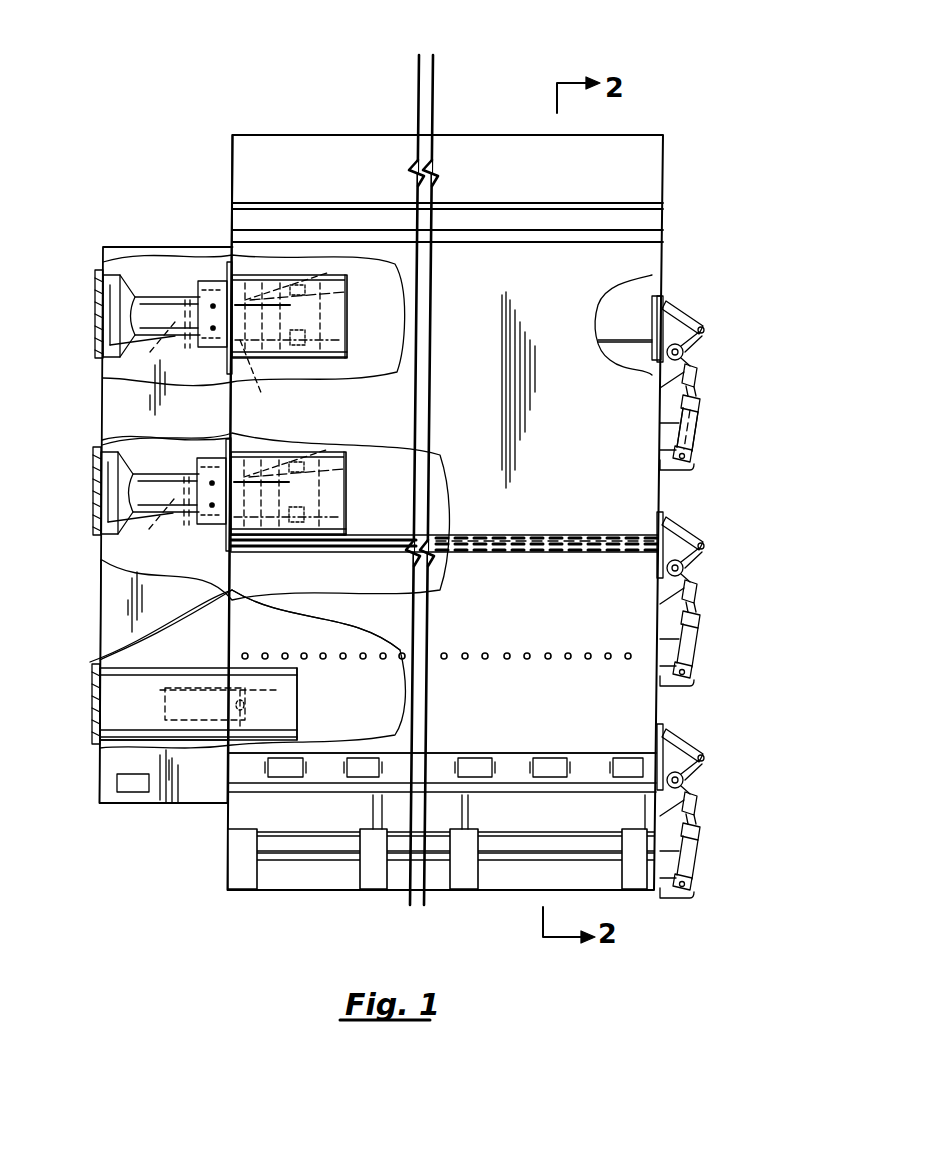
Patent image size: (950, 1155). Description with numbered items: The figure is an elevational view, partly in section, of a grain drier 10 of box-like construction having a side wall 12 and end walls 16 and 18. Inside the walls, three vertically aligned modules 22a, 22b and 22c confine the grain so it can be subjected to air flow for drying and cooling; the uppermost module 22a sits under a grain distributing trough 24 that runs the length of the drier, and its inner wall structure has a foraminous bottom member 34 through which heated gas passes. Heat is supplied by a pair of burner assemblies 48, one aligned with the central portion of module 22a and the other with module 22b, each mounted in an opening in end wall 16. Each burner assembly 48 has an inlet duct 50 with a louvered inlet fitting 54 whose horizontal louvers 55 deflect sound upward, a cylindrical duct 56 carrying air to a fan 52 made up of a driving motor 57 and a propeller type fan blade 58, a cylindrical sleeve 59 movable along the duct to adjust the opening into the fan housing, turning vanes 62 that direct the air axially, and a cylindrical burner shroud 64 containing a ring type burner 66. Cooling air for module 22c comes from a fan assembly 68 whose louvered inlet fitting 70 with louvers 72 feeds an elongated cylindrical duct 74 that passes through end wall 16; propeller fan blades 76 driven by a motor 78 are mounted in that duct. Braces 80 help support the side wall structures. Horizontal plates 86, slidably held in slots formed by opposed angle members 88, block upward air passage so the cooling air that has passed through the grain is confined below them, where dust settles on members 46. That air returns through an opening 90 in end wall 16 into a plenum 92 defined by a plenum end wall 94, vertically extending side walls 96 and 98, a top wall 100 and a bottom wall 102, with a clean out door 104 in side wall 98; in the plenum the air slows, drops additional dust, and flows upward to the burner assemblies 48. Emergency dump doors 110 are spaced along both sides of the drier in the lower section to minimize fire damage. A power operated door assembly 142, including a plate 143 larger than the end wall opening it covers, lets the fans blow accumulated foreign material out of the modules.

The grain drier 10 is at (477, 357).
The side wall 12 is at (562, 319).
The end wall 16 is at (230, 420).
The end wall 18 is at (692, 426).
The module 22a is at (397, 344).
The module 22b is at (397, 510).
The module 22c is at (377, 711).
The grain distributing trough 24 is at (236, 165).
The foraminous bottom member 34 is at (620, 345).
The members 46 is at (585, 757).
The burner assembly 48 is at (118, 342).
The inlet duct 50 is at (148, 294).
The fan 52 is at (190, 350).
The louvered inlet fitting 54 is at (110, 322).
The louvers 55 is at (95, 290).
The cylindrical duct 56 is at (188, 282).
The driving motor 57 is at (150, 352).
The fan blade 58 is at (298, 425).
The cylindrical sleeve 59 is at (228, 270).
The turning vanes 62 is at (330, 272).
The burner shroud 64 is at (347, 360).
The burner 66 is at (345, 295).
The fan assembly 68 is at (143, 715).
The louvered inlet fitting 70 is at (90, 728).
The louvers 72 is at (92, 698).
The cylindrical duct 74 is at (197, 733).
The fan blades 76 is at (285, 693).
The motor 78 is at (193, 688).
The braces 80 is at (486, 660).
The plates 86 is at (572, 535).
The angle members 88 is at (525, 535).
The opening 90 is at (229, 622).
The plenum 92 is at (110, 628).
The plenum end wall 94 is at (128, 600).
The side wall 96 is at (103, 438).
The side wall 98 is at (108, 655).
The top wall 100 is at (175, 247).
The bottom wall 102 is at (170, 803).
The clean out door 104 is at (130, 792).
The emergency dump doors 110 is at (548, 762).
The door assembly 142 is at (702, 362).
The plate 143 is at (650, 300).